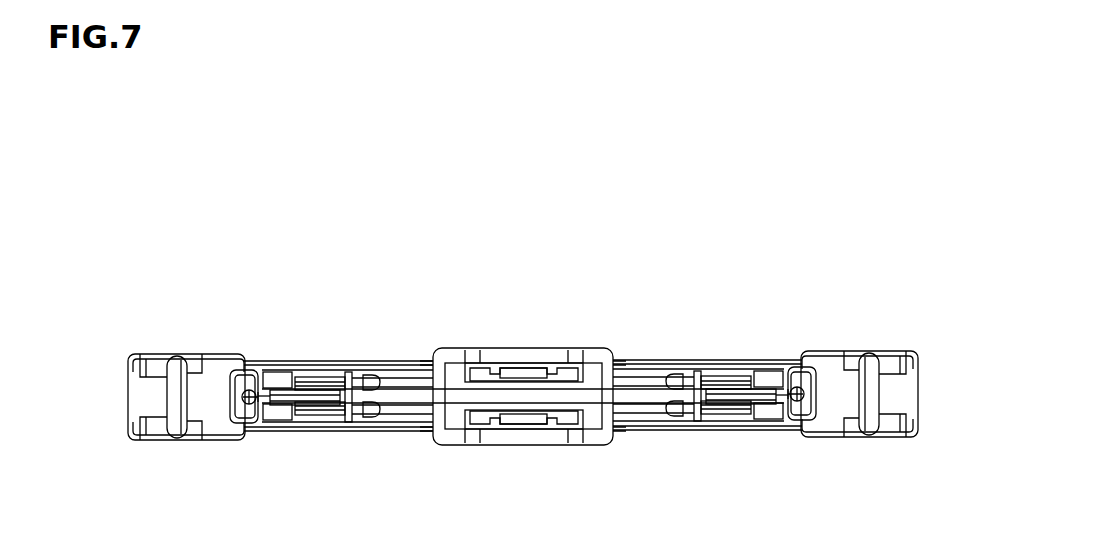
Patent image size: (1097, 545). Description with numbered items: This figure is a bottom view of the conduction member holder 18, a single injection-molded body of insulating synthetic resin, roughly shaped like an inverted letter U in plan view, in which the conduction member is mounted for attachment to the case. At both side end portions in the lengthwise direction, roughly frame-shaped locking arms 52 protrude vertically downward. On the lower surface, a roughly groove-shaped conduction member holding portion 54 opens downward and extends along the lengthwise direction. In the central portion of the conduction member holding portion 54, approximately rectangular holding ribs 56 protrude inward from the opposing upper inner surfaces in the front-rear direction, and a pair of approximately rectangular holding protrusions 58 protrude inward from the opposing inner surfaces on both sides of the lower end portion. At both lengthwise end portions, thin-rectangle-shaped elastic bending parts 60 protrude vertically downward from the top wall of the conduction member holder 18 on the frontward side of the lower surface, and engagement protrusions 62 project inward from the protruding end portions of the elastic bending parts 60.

The conduction member holder 18 is at (518, 265).
The locking arm 52 is at (120, 397).
The conduction member holding portion 54 is at (624, 389).
The holding rib 56 is at (530, 376).
The holding protrusion 58 is at (470, 376).
The elastic bending part 60 is at (322, 362).
The engagement protrusion 62 is at (321, 398).